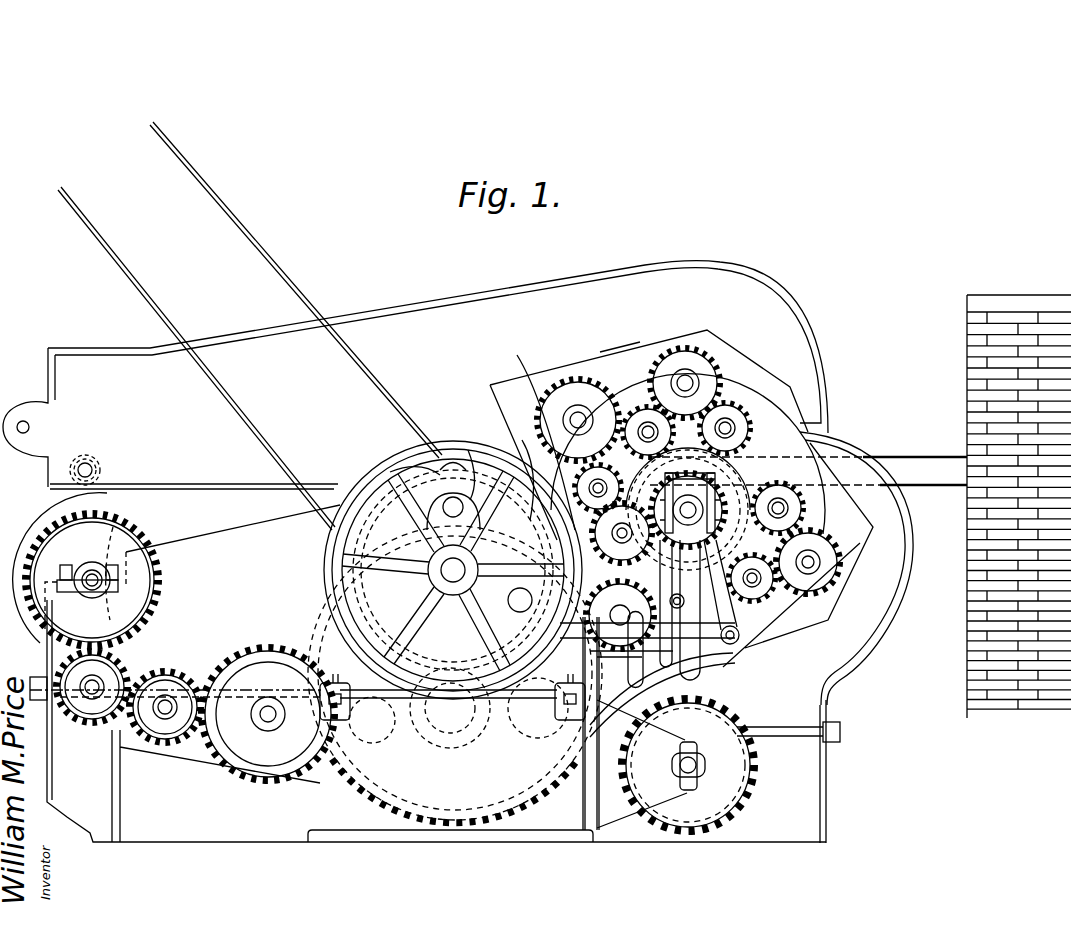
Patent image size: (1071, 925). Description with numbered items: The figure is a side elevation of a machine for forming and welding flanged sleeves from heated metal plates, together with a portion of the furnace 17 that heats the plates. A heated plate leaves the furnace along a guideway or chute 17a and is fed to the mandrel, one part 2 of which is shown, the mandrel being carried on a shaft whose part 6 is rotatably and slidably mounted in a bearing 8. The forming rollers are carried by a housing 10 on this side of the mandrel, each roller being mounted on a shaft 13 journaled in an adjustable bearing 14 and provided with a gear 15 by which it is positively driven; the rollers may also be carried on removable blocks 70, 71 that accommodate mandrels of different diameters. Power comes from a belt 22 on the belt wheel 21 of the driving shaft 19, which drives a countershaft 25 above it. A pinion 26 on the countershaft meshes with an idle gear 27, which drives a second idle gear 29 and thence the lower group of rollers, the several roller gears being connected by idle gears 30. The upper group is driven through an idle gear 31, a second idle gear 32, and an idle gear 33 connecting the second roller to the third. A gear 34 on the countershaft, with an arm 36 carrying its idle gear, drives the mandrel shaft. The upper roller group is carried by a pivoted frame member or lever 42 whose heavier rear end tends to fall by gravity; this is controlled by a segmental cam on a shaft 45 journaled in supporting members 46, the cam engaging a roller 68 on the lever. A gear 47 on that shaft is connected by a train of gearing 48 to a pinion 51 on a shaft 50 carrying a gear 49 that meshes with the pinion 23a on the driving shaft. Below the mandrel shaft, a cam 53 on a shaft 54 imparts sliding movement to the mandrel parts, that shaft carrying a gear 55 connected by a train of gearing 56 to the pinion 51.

The mandrel part 2 is at (738, 505).
The mandrel shaft part 6 is at (785, 495).
The bearing 8 is at (718, 480).
The housing 10 is at (900, 603).
The roller shaft 13 is at (600, 487).
The adjustable bearing 14 is at (30, 522).
The gear 15 is at (645, 410).
The furnace 17 is at (967, 519).
The guideway or chute 17a is at (915, 458).
The driving shaft 19 is at (453, 570).
The belt wheel 21 is at (332, 598).
The belt 22 is at (263, 242).
The pinion 23a is at (453, 570).
The countershaft 25 is at (430, 480).
The pinion 26 is at (450, 460).
The idle gear 27 is at (515, 600).
The idle gear 29 is at (614, 604).
The idle gear 30 is at (560, 636).
The idle gear 31 is at (468, 450).
The idle gear 32 is at (578, 378).
The idle gear 33 is at (692, 350).
The gear 34 is at (390, 472).
The arm 36 is at (522, 440).
The pivoted frame member or lever 42 is at (436, 296).
The shaft 45 is at (92, 584).
The supporting member 46 is at (50, 665).
The gear 47 is at (162, 595).
The train of gearing 48 is at (217, 672).
The gear 49 is at (385, 808).
The shaft 50 is at (470, 720).
The pinion 51 is at (448, 740).
The cam 53 is at (758, 772).
The shaft 54 is at (700, 763).
The gear 55 is at (738, 725).
The train of gearing 56 is at (565, 775).
The roller 68 is at (105, 447).
The removable block 70 is at (620, 352).
The removable block 71 is at (815, 623).